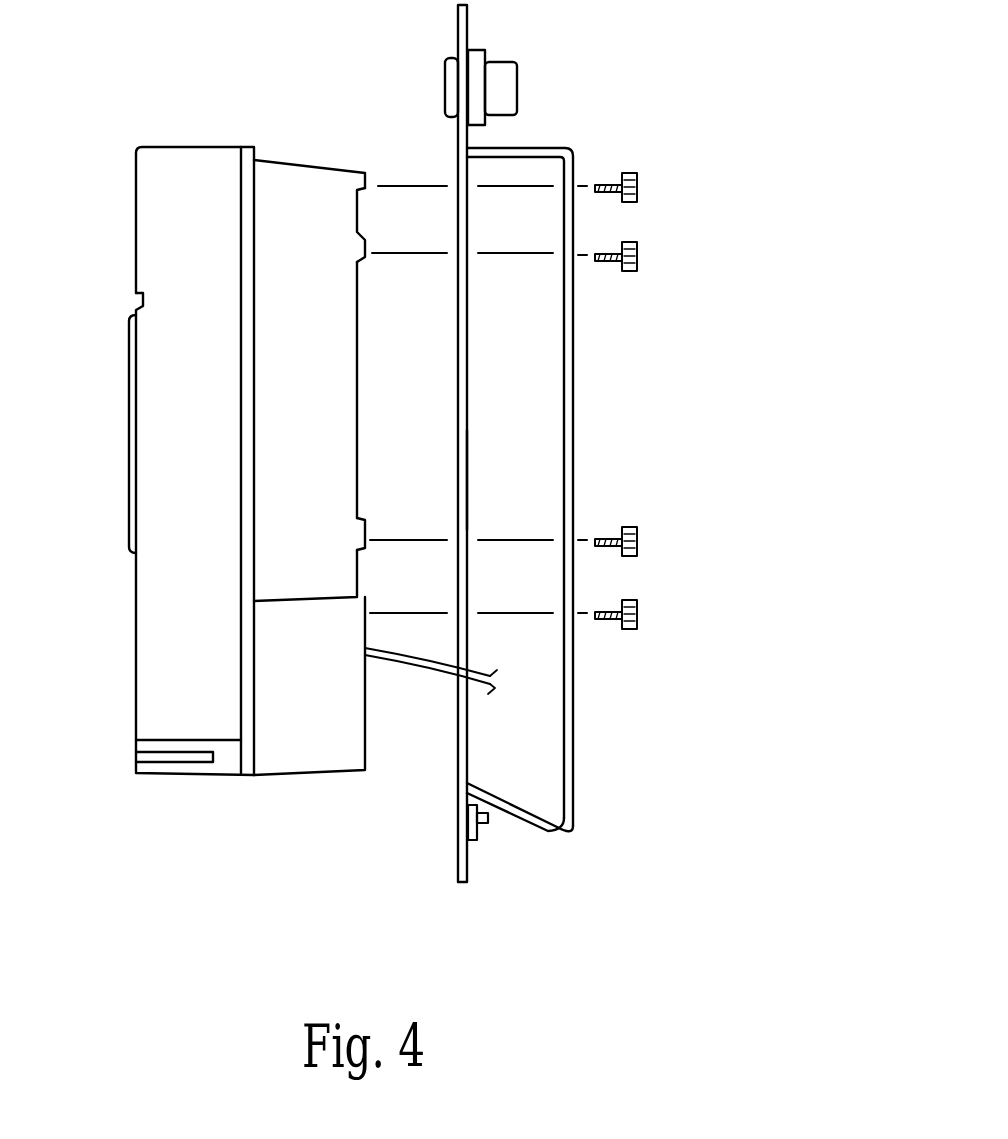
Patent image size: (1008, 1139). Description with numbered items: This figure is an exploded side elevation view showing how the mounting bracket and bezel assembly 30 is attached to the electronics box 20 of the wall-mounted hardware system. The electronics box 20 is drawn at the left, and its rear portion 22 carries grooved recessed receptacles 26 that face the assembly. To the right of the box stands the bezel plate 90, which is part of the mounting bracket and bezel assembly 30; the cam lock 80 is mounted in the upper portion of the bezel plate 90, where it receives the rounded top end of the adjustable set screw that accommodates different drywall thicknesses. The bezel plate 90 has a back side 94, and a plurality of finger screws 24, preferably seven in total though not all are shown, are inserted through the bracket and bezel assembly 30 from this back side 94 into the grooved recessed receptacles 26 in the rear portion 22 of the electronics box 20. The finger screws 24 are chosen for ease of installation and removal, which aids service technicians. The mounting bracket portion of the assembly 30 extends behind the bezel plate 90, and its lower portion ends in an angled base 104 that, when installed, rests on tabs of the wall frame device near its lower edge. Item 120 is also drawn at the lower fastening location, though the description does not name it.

The electronics box 20 is at (133, 724).
The rear portion 22 is at (357, 383).
The grooved recessed receptacles 26 is at (366, 190).
The bezel plate 90 is at (468, 392).
The back side 94 is at (468, 482).
The cam lock 80 is at (502, 62).
The finger screws 24 is at (637, 610).
The mounting bracket and bezel assembly 30 is at (574, 818).
The angled base 104 is at (543, 833).
The fastener 120 is at (483, 823).